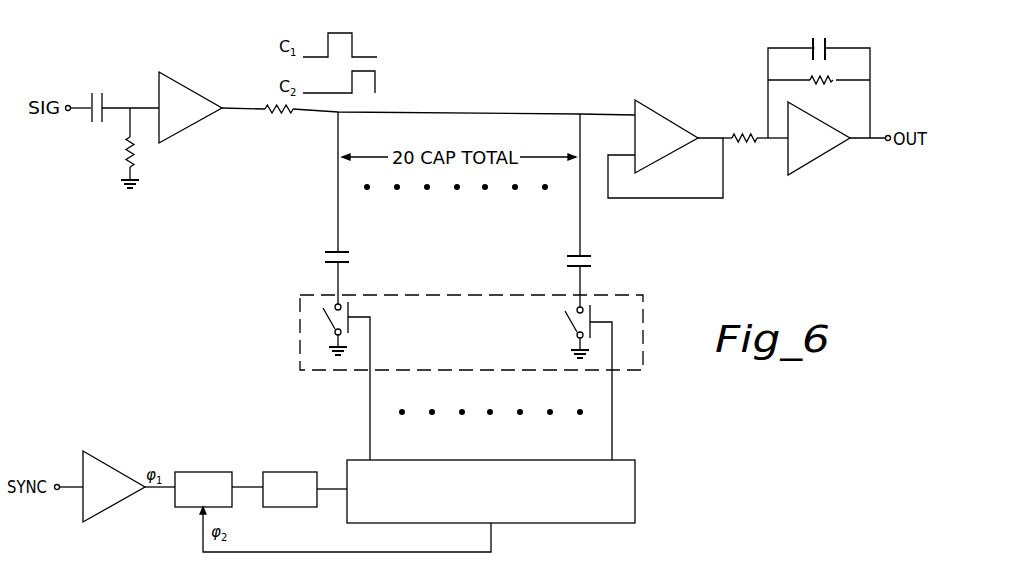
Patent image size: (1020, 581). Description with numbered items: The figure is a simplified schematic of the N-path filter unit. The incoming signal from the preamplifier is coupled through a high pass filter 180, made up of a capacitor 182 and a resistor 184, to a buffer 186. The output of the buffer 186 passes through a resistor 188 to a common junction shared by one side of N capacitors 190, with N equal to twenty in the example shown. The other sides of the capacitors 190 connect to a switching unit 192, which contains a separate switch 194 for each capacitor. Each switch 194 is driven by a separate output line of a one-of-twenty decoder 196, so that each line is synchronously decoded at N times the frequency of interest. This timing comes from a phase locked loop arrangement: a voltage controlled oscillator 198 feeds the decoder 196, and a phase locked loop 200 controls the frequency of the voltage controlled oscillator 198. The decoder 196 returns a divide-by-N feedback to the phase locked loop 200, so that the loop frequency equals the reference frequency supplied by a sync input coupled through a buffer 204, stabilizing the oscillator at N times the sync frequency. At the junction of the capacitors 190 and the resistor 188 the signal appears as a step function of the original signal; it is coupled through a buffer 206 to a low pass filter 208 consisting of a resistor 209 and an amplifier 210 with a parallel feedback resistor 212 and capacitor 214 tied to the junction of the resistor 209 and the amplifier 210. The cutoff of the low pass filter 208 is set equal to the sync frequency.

The high pass filter 180 is at (125, 84).
The capacitor 182 is at (91, 120).
The resistor 184 is at (135, 151).
The buffer 186 is at (207, 121).
The resistor 188 is at (271, 105).
The capacitors 190 is at (325, 251).
The switching unit 192 is at (334, 370).
The switch 194 is at (327, 318).
The decoder 196 is at (636, 500).
The voltage controlled oscillator 198 is at (288, 454).
The phase locked loop 200 is at (192, 472).
The buffer 204 is at (111, 460).
The buffer 206 is at (667, 112).
The low pass filter 208 is at (839, 72).
The resistor 209 is at (748, 134).
The amplifier 210 is at (808, 164).
The feedback resistor 212 is at (861, 68).
The capacitor 214 is at (808, 54).